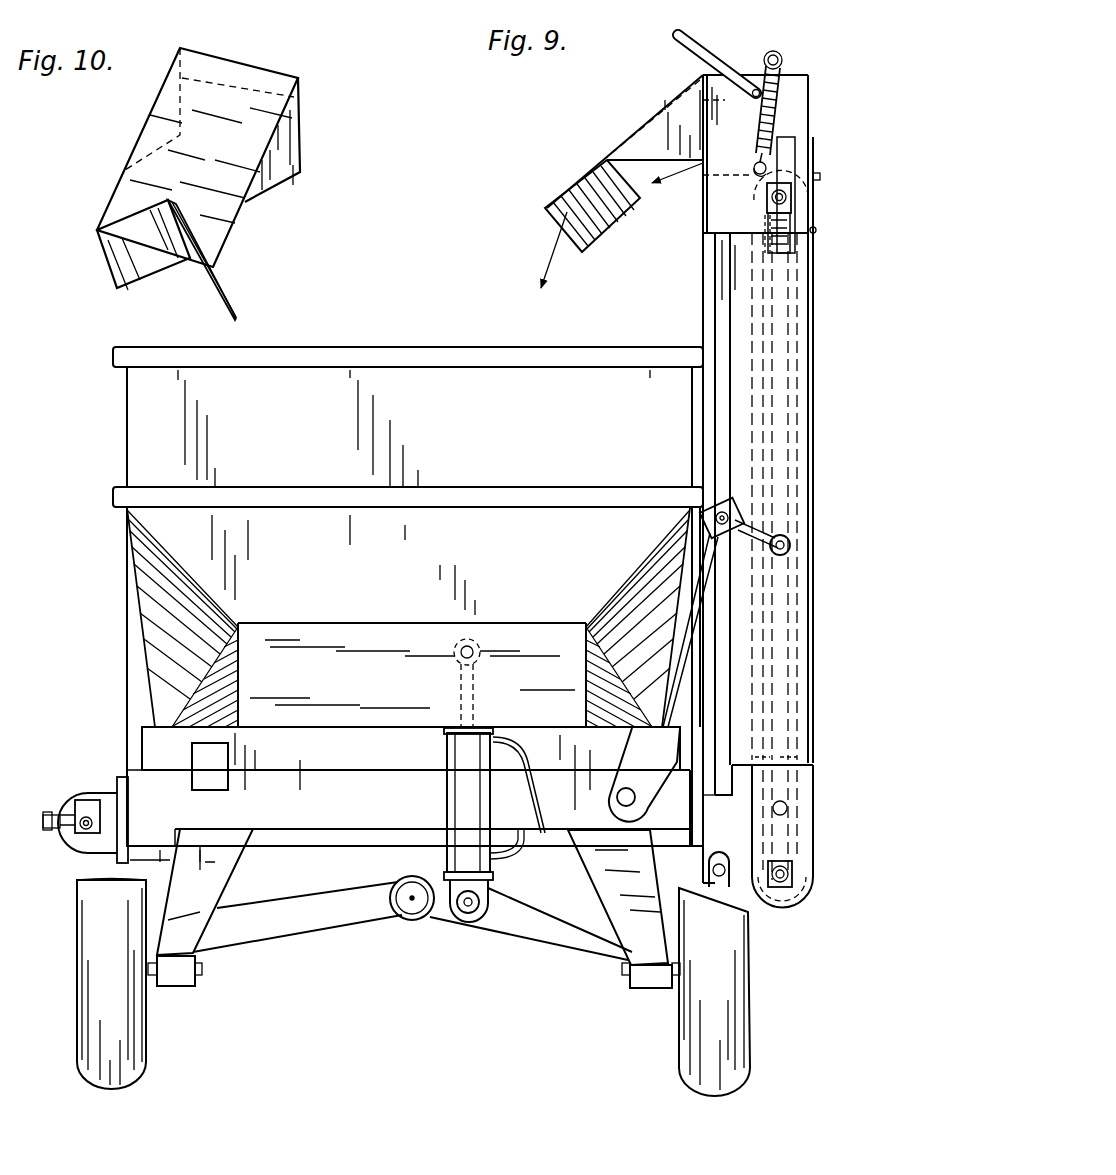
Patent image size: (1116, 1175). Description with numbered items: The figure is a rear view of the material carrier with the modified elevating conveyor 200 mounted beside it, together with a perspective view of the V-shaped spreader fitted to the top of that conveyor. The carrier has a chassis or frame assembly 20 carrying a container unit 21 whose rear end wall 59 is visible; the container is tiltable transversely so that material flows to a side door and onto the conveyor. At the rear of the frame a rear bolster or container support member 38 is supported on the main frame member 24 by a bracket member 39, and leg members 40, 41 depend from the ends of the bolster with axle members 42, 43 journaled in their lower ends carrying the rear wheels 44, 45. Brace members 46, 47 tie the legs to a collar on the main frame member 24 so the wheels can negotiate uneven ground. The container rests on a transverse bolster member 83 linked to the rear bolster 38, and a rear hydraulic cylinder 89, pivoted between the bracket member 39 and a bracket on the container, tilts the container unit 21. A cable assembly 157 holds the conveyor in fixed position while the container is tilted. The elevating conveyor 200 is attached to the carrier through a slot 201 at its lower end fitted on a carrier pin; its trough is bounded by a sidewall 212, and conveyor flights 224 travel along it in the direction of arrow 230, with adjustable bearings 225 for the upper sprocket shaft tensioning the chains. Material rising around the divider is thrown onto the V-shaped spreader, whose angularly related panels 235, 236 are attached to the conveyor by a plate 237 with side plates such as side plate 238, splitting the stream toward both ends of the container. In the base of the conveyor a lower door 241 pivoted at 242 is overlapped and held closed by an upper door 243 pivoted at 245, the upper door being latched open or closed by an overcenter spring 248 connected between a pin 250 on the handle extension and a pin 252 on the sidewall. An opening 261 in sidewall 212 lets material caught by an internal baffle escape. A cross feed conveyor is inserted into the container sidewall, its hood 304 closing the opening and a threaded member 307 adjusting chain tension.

In FIG. 9, the chassis or frame assembly 20 is at (108, 755).
In FIG. 9, the container unit 21 is at (110, 607).
In FIG. 9, the main frame member 24 is at (408, 923).
In FIG. 9, the rear bolster or container support member 38 is at (290, 825).
In FIG. 9, the bracket member 39 is at (438, 912).
In FIG. 9, the leg member 40 is at (190, 917).
In FIG. 9, the leg member 41 is at (630, 930).
In FIG. 9, the axle member 42 is at (200, 967).
In FIG. 9, the axle member 43 is at (627, 967).
In FIG. 9, the rear wheel 44 is at (128, 1040).
In FIG. 9, the rear wheel 45 is at (700, 1033).
In FIG. 9, the brace member 46 is at (318, 918).
In FIG. 9, the brace member 47 is at (515, 923).
In FIG. 9, the rear end wall 59 is at (438, 572).
In FIG. 9, the bolster member 83 is at (386, 767).
In FIG. 9, the rear hydraulic cylinder 89 is at (450, 803).
In FIG. 9, the cable assembly 157 is at (688, 625).
In FIG. 9, the elevator conveyor 200 is at (828, 400).
In FIG. 9, the slot 201 is at (733, 885).
In FIG. 9, the sidewall 212 is at (798, 345).
In FIG. 9, the conveyor flights 224 is at (800, 722).
In FIG. 9, the bearings 225 is at (768, 200).
In FIG. 9, the arrow 230 is at (790, 896).
In FIG. 10, the panel 235 is at (112, 270).
In FIG. 10, the panel 236 is at (208, 282).
In FIG. 9, the panel 236 is at (567, 211).
In FIG. 10, the plate 237 is at (242, 95).
In FIG. 9, the plate 237 is at (650, 116).
In FIG. 10, the side plate 238 is at (290, 146).
In FIG. 9, the side plate 238 is at (657, 138).
In FIG. 9, the lower door 241 is at (814, 177).
In FIG. 9, the pivot 242 is at (816, 232).
In FIG. 9, the upper door 243 is at (808, 125).
In FIG. 9, the pivot 245 is at (750, 85).
In FIG. 9, the overcenter spring 248 is at (775, 97).
In FIG. 9, the pin 250 is at (790, 30).
In FIG. 9, the pin 252 is at (764, 169).
In FIG. 9, the opening 261 is at (787, 808).
In FIG. 9, the hood 304 is at (76, 796).
In FIG. 9, the threaded member 307 is at (62, 832).